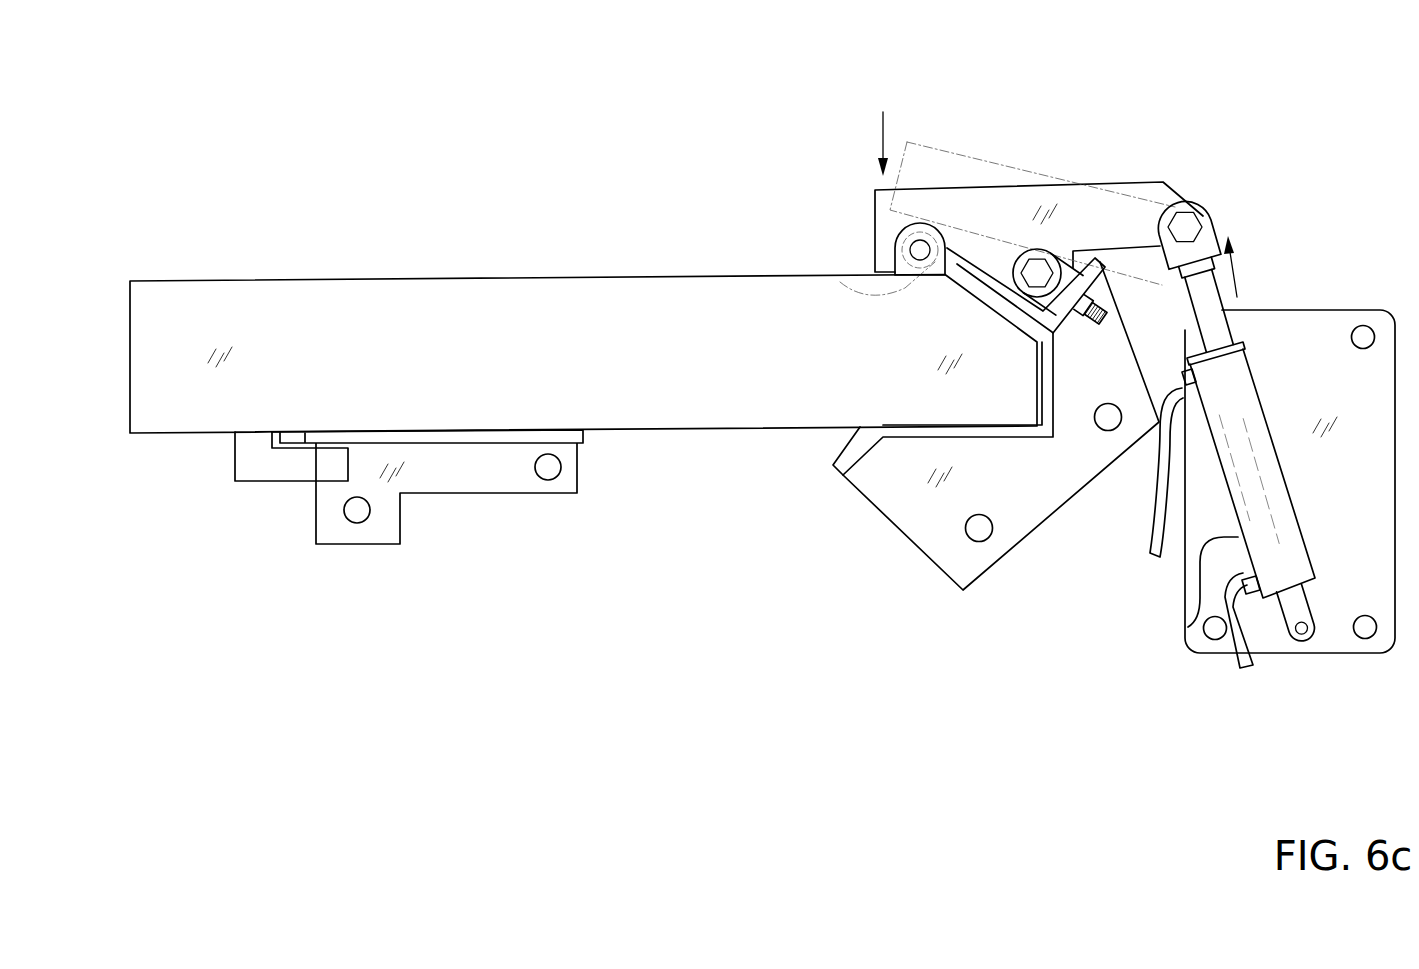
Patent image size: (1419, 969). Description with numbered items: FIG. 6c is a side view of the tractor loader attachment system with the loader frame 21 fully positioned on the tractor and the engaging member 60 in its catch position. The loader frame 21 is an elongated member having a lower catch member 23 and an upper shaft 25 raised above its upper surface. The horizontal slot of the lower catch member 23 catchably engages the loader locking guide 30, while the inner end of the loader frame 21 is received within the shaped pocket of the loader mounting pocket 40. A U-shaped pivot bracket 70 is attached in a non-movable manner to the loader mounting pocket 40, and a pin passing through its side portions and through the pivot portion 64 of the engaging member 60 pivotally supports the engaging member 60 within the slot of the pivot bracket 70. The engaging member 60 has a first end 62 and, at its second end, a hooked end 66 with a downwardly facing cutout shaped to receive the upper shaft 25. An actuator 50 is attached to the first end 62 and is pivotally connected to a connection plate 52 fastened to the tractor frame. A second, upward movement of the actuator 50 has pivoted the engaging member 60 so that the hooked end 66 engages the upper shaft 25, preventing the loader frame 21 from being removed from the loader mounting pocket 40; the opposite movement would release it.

The loader frame 21 is at (350, 323).
The lower catch member 23 is at (292, 482).
The upper shaft 25 is at (840, 282).
The loader locking guide 30 is at (488, 497).
The loader mounting pocket 40 is at (908, 527).
The actuator 50 is at (1186, 624).
The connection plate 52 is at (1308, 310).
The engaging member 60 is at (1113, 165).
The first end 62 is at (1190, 197).
The pivot portion 64 is at (1012, 282).
The hooked end 66 is at (873, 230).
The pivot bracket 70 is at (1073, 250).